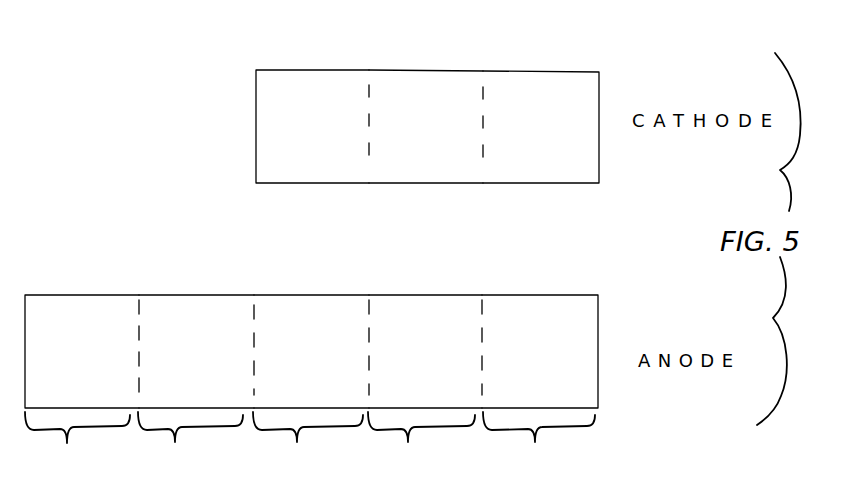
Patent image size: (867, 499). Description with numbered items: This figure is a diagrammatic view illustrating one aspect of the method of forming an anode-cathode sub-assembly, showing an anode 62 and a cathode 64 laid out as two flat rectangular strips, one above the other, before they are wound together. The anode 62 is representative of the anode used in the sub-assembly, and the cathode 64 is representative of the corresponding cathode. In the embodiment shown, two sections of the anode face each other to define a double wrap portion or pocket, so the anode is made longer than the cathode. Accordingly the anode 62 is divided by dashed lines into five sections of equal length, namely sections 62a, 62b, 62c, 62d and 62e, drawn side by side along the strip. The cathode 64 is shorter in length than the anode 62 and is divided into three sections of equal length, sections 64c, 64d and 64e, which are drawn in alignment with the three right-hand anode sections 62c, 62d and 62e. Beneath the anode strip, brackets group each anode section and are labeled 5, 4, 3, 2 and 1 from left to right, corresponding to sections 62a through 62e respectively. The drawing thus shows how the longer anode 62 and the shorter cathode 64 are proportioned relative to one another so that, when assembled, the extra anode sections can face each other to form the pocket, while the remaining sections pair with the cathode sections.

The cathode 64 is at (545, 44).
The cathode section 64c is at (319, 141).
The cathode section 64d is at (447, 142).
The cathode section 64e is at (547, 141).
The anode 62 is at (545, 280).
The anode section 62a is at (82, 375).
The anode section 62b is at (207, 374).
The anode section 62c is at (323, 370).
The anode section 62d is at (442, 371).
The anode section 62e is at (558, 369).
The anode region 1 is at (539, 440).
The anode region 2 is at (421, 440).
The anode region 3 is at (308, 441).
The anode region 4 is at (190, 440).
The anode region 5 is at (77, 445).